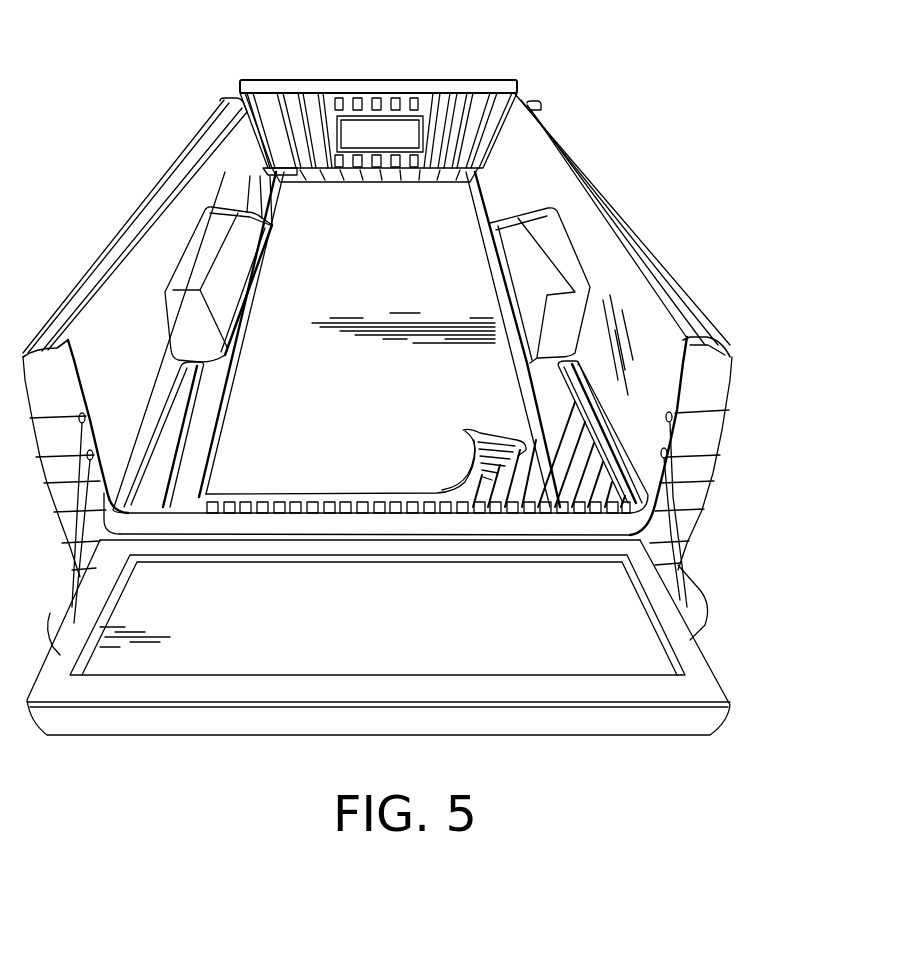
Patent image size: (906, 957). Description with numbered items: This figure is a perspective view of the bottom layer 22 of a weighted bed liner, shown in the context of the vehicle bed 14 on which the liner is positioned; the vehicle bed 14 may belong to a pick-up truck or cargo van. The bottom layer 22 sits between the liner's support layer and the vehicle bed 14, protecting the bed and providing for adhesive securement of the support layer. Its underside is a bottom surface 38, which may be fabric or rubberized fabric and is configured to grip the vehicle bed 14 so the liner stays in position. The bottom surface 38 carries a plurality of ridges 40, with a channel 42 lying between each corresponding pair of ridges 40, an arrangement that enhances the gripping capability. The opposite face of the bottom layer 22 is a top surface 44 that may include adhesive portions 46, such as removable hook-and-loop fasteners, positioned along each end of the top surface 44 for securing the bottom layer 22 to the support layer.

The vehicle bed 14 is at (377, 365).
The bottom layer 22 is at (480, 380).
The bottom surface 38 is at (543, 440).
The ridges 40 is at (478, 470).
The channel 42 is at (458, 492).
The top surface 44 is at (410, 245).
The adhesive portions 46 is at (333, 181).